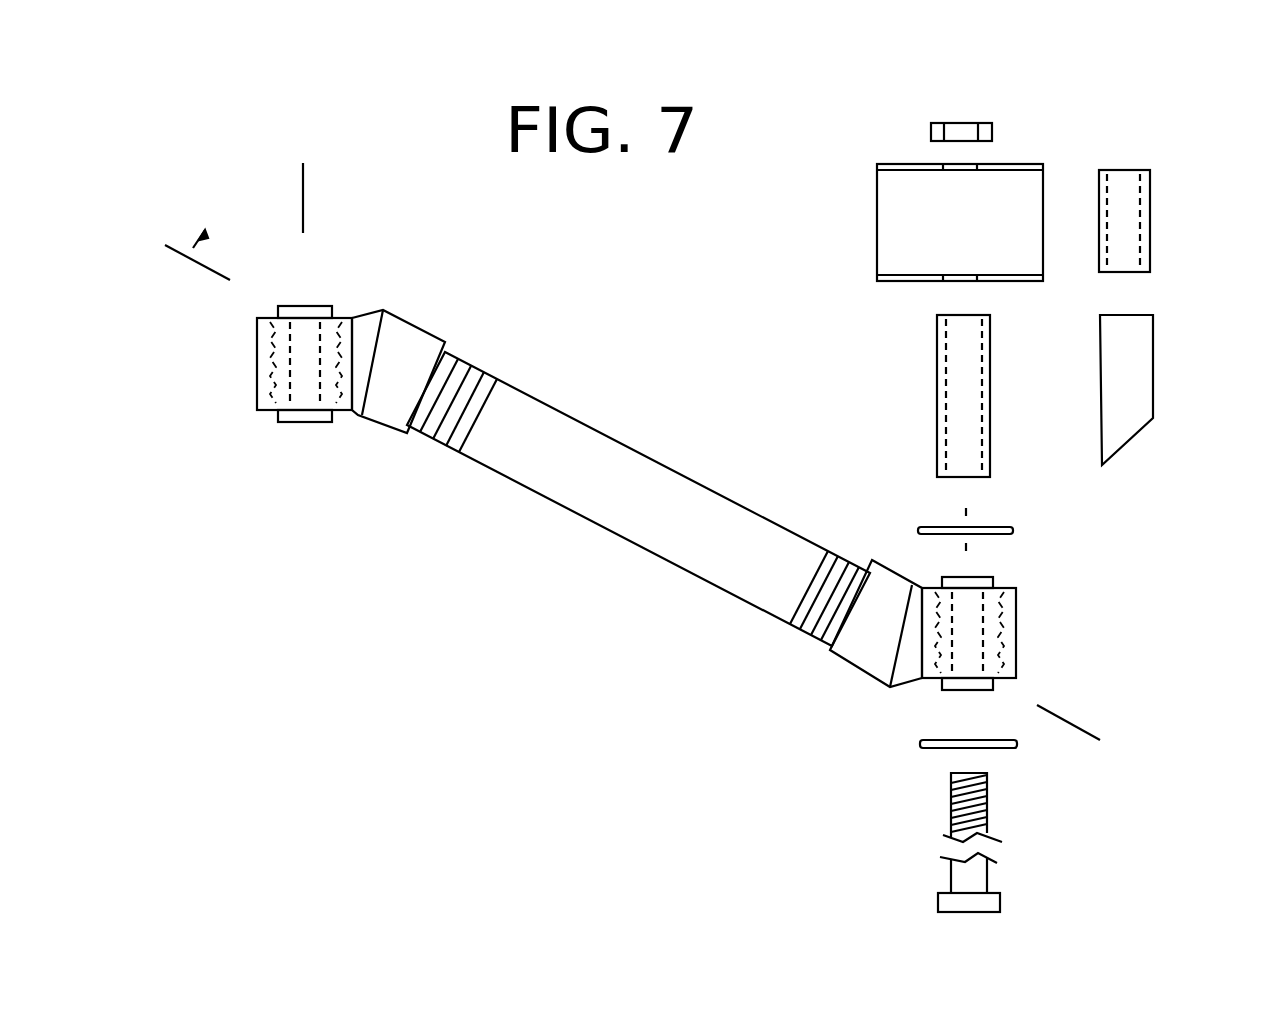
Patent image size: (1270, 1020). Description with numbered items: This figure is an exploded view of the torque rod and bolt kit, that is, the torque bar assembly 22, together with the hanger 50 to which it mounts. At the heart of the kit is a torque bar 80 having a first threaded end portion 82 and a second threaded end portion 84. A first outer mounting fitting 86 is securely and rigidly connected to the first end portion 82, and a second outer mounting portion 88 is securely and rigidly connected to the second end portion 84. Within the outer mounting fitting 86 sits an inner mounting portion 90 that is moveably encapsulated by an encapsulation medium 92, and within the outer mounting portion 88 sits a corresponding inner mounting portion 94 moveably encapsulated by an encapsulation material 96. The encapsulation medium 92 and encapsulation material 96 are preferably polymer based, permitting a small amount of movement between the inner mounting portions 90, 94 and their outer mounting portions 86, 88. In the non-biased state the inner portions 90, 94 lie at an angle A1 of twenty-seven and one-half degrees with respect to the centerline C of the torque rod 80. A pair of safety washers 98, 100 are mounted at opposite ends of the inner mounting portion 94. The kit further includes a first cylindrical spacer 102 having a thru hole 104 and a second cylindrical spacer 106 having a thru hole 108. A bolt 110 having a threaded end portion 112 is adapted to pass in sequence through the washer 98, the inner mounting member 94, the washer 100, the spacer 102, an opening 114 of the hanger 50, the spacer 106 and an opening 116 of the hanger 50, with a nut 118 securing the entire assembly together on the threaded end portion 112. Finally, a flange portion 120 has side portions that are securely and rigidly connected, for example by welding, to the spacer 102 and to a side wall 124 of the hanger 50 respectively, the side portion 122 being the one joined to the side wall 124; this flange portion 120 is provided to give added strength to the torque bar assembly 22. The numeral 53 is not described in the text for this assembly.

The torque bar assembly 22 is at (674, 410).
The hanger 50 is at (890, 163).
The upper groove 53 is at (925, 163).
The torque bar 80 is at (646, 552).
The first threaded end portion 82 is at (470, 376).
The second threaded end portion 84 is at (828, 552).
The first outer mounting fitting 86 is at (423, 327).
The second outer mounting portion 88 is at (850, 667).
The inner mounting portion 90 is at (312, 305).
The encapsulation medium 92 is at (270, 407).
The inner mounting portion 94 is at (977, 578).
The encapsulation material 96 is at (1010, 587).
The safety washer 98 is at (997, 748).
The safety washer 100 is at (987, 523).
The first cylindrical spacer 102 is at (940, 428).
The thru hole 104 is at (962, 397).
The second cylindrical spacer 106 is at (1148, 207).
The thru hole 108 is at (1122, 263).
The bolt 110 is at (980, 882).
The threaded end portion 112 is at (990, 792).
The opening 114 is at (952, 283).
The opening 116 is at (975, 165).
The nut 118 is at (962, 128).
The flange portion 120 is at (1132, 442).
The side portion 122 is at (1125, 318).
The side wall 124 is at (1000, 282).
The angle A1 is at (298, 183).
The centerline C is at (1128, 755).